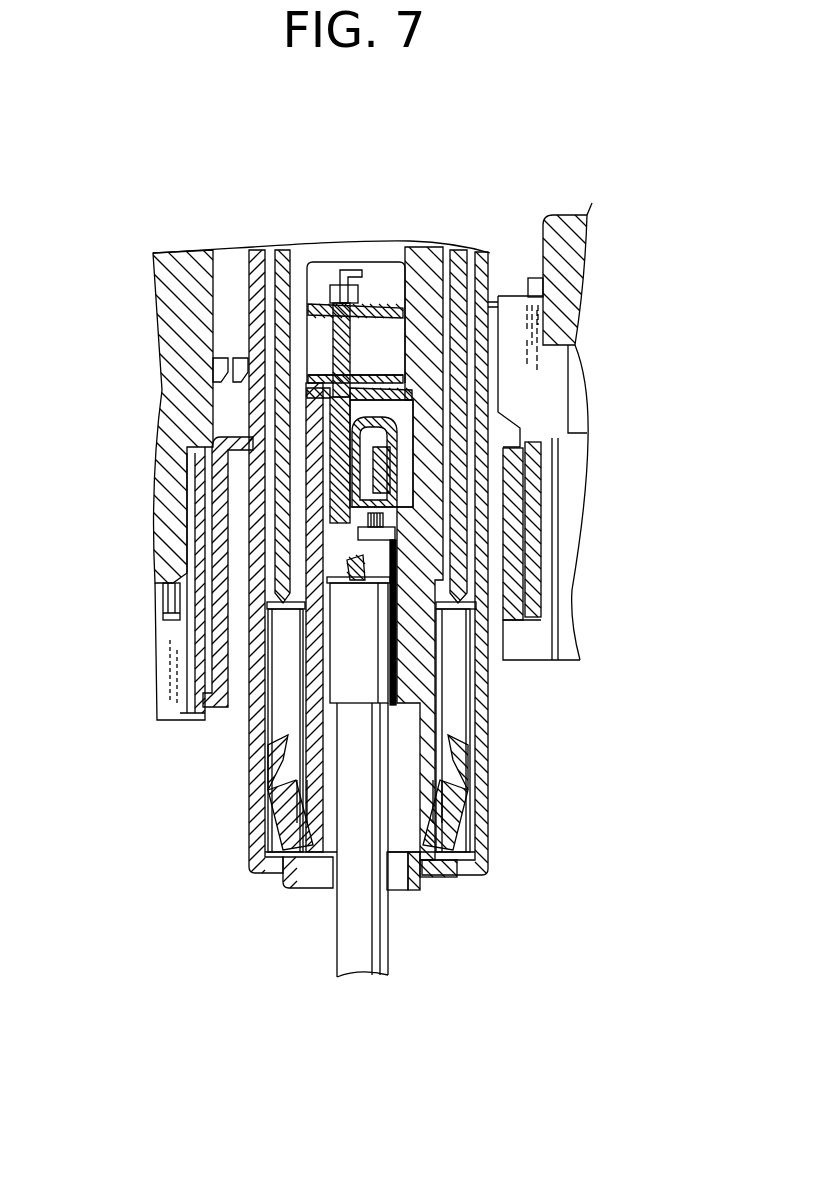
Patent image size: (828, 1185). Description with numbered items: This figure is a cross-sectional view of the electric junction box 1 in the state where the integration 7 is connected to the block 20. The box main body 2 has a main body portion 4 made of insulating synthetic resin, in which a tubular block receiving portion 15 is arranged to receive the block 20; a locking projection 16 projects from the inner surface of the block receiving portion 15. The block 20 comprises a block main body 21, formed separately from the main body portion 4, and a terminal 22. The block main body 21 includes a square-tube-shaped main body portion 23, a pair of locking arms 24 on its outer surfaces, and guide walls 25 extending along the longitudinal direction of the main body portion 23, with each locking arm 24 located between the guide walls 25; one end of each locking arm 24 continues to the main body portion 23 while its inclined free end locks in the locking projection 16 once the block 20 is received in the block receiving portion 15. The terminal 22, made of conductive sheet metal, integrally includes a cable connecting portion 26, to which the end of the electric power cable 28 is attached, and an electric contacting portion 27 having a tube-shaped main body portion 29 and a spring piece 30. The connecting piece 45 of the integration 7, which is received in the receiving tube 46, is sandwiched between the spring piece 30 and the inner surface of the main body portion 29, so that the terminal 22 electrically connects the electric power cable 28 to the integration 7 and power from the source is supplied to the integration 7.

The electric junction box 1 is at (307, 184).
The box main body 2 is at (481, 258).
The main body portion 4 is at (493, 272).
The integration 7 is at (330, 260).
The block receiving portion 15 is at (462, 640).
The locking projection 16 is at (287, 737).
The block 20 is at (425, 413).
The block main body 21 is at (447, 380).
The terminal 22 is at (402, 617).
The main body portion 23 is at (190, 722).
The locking arm 24 is at (287, 812).
The guide wall 25 is at (283, 667).
The cable connecting portion 26 is at (290, 733).
The electric contacting portion 27 is at (335, 490).
The electric power cable 28 is at (383, 918).
The main body portion 29 is at (330, 455).
The spring piece 30 is at (320, 545).
The connecting piece 45 is at (333, 367).
The receiving tube 46 is at (318, 425).